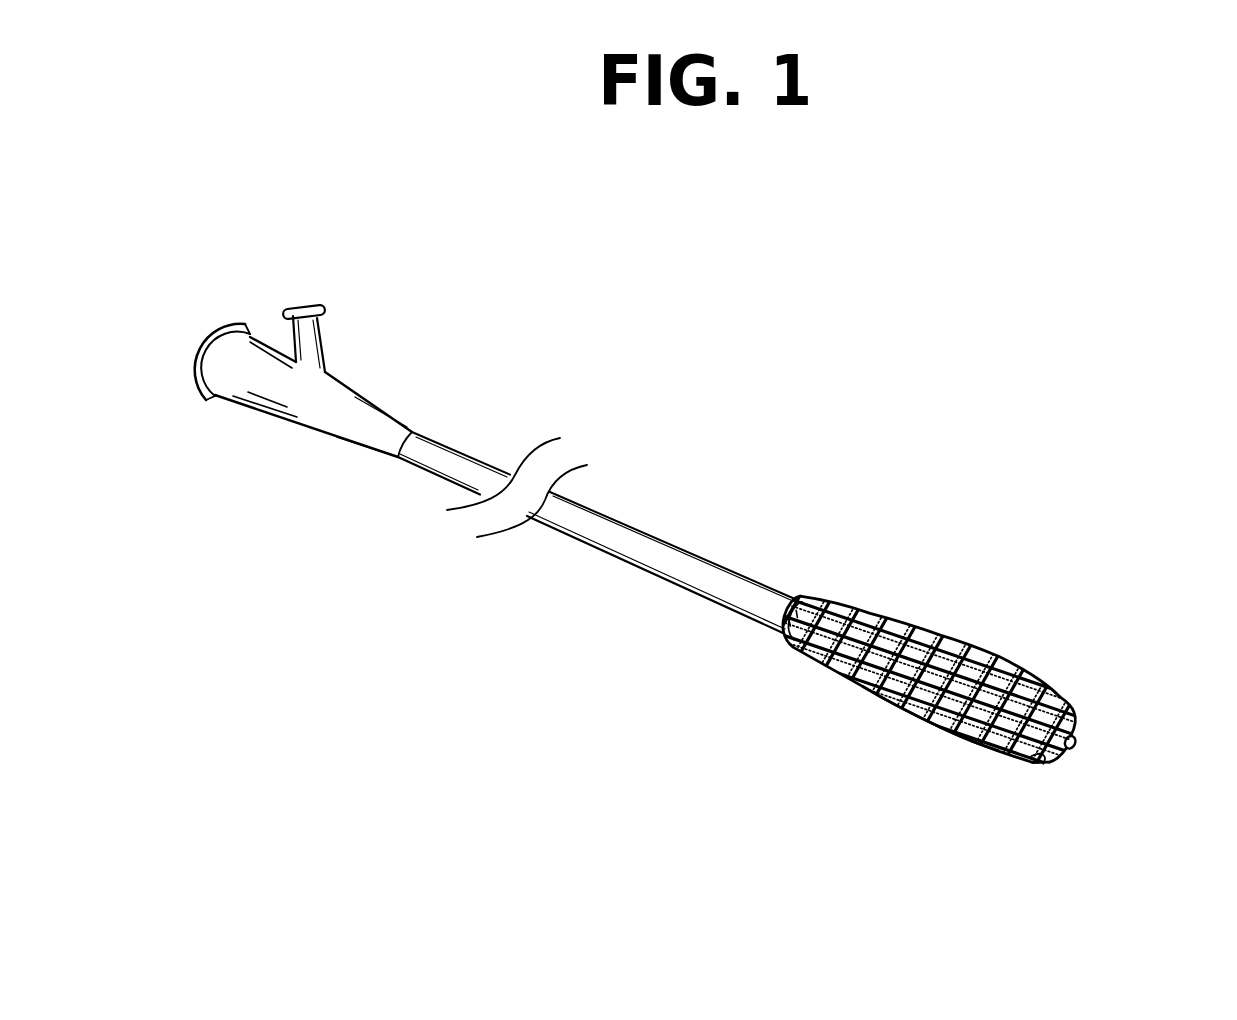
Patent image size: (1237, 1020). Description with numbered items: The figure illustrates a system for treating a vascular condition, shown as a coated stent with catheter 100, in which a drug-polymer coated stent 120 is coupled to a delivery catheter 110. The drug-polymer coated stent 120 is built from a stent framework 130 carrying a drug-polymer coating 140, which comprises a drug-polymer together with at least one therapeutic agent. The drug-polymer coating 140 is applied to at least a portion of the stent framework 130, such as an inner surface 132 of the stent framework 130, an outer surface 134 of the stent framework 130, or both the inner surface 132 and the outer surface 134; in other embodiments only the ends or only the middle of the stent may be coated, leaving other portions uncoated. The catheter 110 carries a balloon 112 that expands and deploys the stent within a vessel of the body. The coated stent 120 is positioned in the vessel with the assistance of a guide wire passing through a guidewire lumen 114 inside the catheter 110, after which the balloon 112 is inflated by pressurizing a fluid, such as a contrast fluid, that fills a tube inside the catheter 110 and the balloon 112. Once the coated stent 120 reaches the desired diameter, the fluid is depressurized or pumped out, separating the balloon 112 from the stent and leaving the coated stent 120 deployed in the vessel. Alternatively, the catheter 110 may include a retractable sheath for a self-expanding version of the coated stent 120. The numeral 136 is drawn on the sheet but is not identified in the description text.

The coated stent with catheter 100 is at (282, 220).
The delivery catheter 110 is at (458, 450).
The balloon 112 is at (1062, 758).
The guidewire lumen 114 is at (1080, 736).
The drug-polymer coated stent 120 is at (887, 612).
The stent framework 130 is at (947, 640).
The inner surface 132 is at (1043, 768).
The outer surface 134 is at (1017, 765).
The basket strut 136 is at (958, 740).
The drug-polymer coating 140 is at (1020, 668).